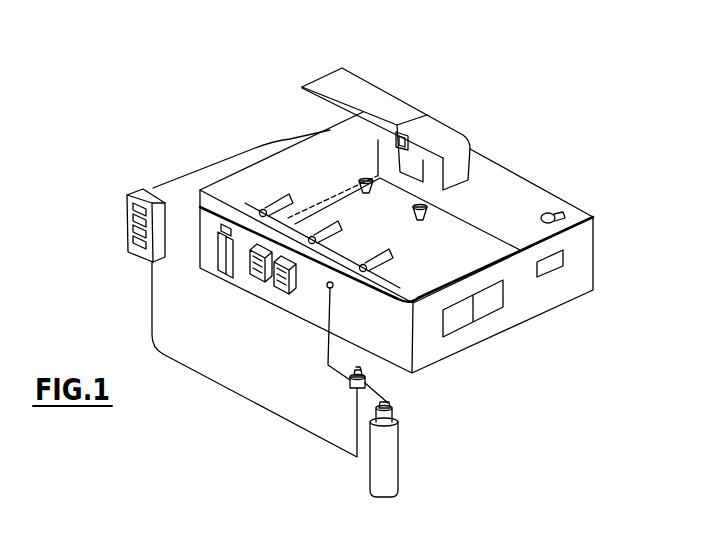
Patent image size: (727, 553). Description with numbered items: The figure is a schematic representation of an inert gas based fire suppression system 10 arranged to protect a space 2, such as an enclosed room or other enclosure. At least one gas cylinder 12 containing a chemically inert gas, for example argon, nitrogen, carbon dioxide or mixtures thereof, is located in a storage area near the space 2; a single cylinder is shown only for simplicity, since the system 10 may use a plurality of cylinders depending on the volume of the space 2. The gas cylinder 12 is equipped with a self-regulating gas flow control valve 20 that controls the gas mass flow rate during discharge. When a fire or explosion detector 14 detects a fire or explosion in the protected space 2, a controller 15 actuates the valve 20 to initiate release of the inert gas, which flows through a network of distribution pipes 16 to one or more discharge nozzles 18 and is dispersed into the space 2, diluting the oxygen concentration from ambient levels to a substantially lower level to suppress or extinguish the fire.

The space 2 is at (492, 197).
The inert gas based fire suppression system 10 is at (462, 97).
The gas cylinder 12 is at (371, 490).
The fire or explosion detector 14 is at (397, 138).
The controller 15 is at (130, 248).
The distribution pipes 16 is at (338, 268).
The discharge nozzles 18 is at (340, 229).
The self-regulating gas flow control valve 20 is at (358, 408).